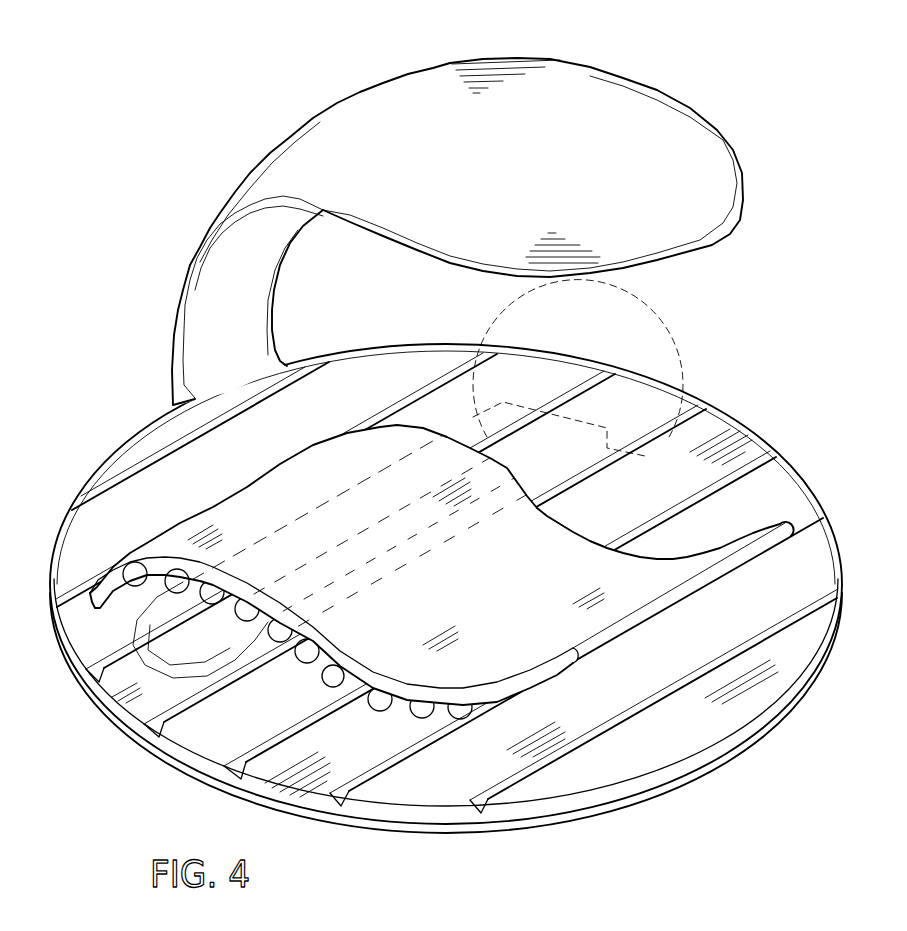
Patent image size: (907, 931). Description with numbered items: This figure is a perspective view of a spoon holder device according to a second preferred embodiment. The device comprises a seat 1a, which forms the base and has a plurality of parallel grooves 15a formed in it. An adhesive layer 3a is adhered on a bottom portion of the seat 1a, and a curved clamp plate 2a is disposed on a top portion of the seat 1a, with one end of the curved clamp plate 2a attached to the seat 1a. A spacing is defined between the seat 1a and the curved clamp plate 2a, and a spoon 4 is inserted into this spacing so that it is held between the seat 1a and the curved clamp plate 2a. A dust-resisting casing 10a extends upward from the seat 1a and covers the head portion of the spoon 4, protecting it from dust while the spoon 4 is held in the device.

The seat 1a is at (763, 720).
The curved clamp plate 2a is at (642, 584).
The adhesive layer 3a is at (743, 750).
The spoon 4 is at (680, 350).
The dust-resisting casing 10a is at (633, 127).
The parallel grooves 15a is at (523, 770).